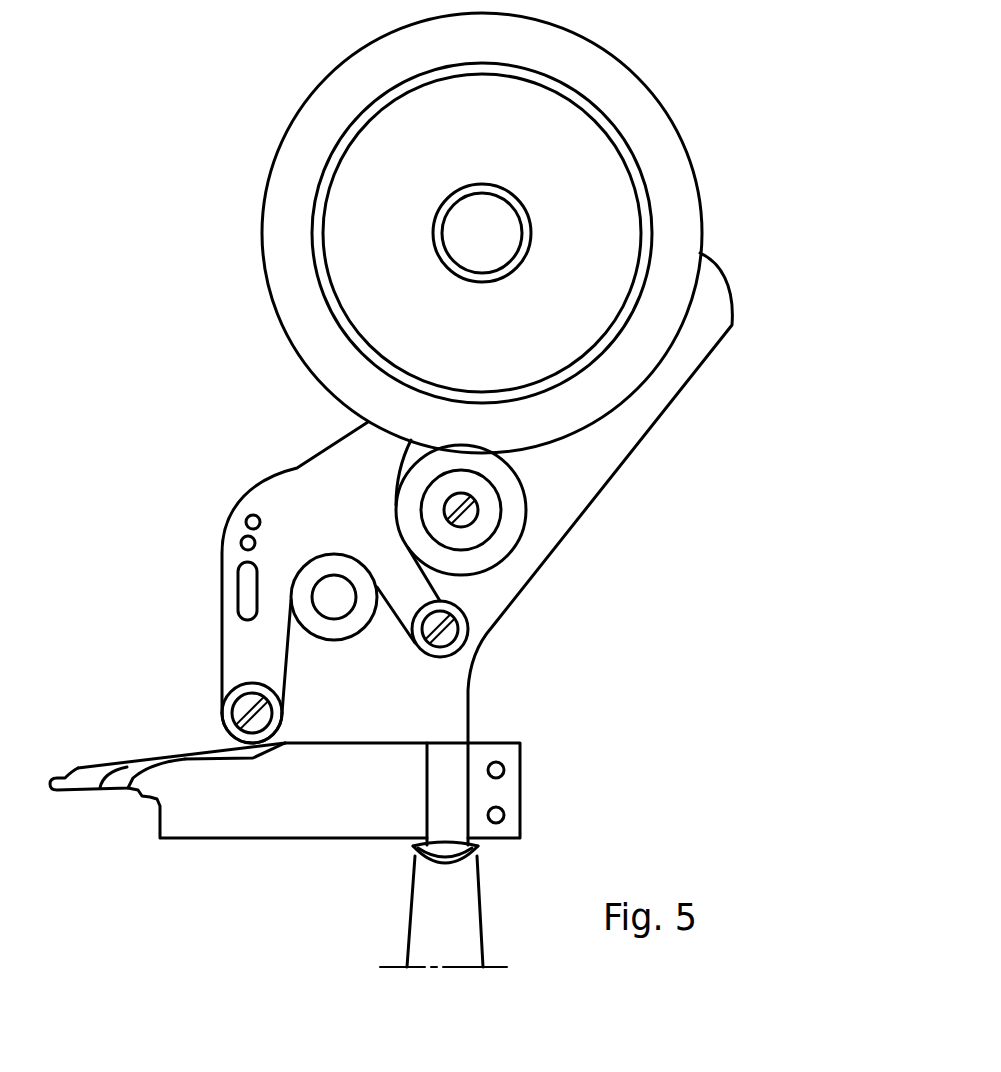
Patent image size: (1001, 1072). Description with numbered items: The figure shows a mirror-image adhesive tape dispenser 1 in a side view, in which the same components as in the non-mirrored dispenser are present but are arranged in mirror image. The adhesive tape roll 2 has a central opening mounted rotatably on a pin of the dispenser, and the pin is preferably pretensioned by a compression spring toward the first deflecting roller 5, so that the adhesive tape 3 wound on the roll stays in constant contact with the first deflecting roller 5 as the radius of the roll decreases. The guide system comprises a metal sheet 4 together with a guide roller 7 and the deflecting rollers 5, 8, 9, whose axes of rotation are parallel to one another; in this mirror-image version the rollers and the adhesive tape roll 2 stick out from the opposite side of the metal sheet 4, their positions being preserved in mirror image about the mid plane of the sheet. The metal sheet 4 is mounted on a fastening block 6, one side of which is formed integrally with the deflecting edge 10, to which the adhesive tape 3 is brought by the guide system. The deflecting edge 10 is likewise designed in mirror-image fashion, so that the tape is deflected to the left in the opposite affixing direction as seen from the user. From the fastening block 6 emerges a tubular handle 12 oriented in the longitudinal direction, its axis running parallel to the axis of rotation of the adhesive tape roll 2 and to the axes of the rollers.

The adhesive tape dispenser 1 is at (140, 426).
The adhesive tape roll 2 is at (303, 289).
The adhesive tape 3 is at (316, 542).
The metal sheet 4 is at (222, 556).
The first deflecting roller 5 is at (515, 523).
The fastening block 6 is at (285, 787).
The guide roller 7 is at (302, 600).
The deflecting roller 8 is at (227, 703).
The deflecting roller 9 is at (457, 643).
The deflecting edge 10 is at (123, 782).
The handle 12 is at (438, 911).